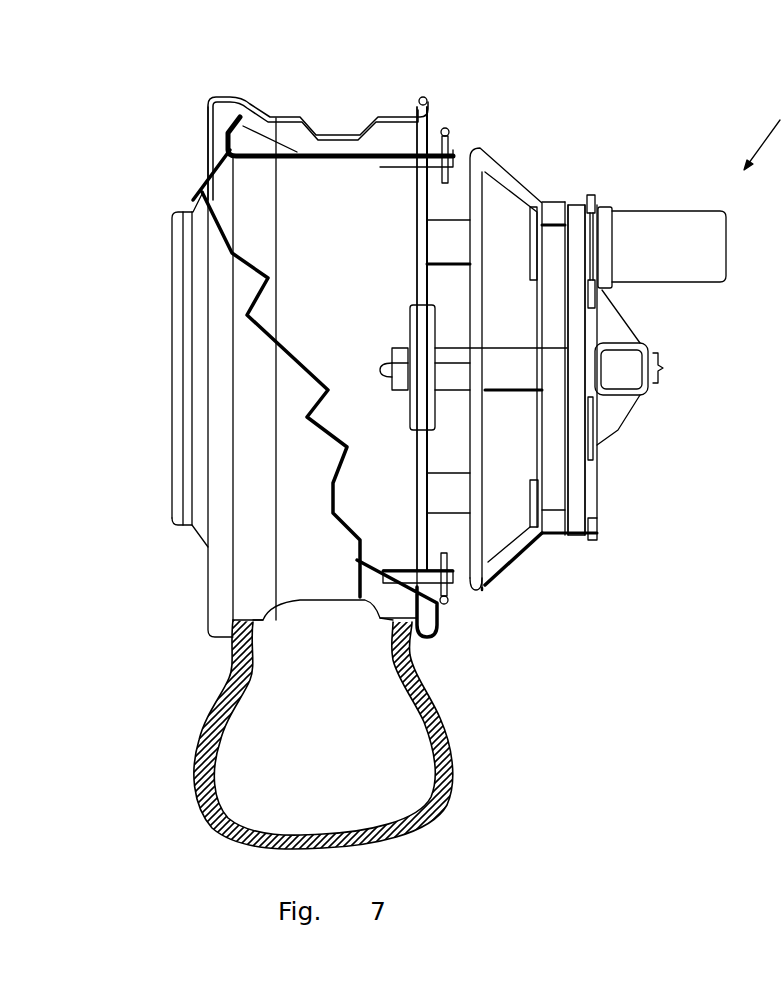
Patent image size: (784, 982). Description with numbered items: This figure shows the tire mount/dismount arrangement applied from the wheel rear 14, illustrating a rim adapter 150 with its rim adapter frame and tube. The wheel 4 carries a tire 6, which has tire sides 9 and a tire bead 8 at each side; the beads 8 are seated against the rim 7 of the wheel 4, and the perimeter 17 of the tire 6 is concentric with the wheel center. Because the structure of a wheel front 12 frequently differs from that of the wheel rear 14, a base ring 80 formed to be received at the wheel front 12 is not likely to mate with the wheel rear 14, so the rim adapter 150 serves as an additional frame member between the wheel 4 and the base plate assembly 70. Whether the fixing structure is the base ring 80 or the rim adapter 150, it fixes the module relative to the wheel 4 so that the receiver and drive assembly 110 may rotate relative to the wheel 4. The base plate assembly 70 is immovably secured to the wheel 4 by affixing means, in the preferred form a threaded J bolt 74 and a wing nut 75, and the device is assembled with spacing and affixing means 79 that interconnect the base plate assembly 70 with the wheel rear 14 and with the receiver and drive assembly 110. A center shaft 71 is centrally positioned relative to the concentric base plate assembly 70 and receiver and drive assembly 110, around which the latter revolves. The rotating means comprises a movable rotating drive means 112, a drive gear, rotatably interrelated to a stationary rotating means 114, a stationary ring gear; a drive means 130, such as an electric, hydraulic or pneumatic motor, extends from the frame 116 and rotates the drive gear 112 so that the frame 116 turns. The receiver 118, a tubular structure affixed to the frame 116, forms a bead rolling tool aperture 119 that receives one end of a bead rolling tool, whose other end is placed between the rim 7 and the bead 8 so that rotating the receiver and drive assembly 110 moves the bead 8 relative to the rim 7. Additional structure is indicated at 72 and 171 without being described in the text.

The wheel 4 is at (192, 193).
The tire 6 is at (427, 720).
The rim 7 is at (222, 96).
The tire bead 8 is at (383, 656).
The tire side 9 is at (237, 668).
The wheel front 12 is at (173, 462).
The wheel rear 14 is at (435, 148).
The perimeter of the tire 17 is at (310, 848).
The base plate assembly 70 is at (521, 579).
The center shaft 71 is at (663, 368).
The channel bracket 72 is at (527, 547).
The bolt 74 is at (262, 120).
The nut 75 is at (448, 135).
The spacing and affixing means 79 is at (450, 230).
The base ring 80 is at (483, 148).
The receiver and drive assembly 110 is at (592, 150).
The movable rotating drive means 112 is at (597, 205).
The stationary rotating means 114 is at (575, 205).
The frame 116 is at (622, 434).
The receiver 118 is at (640, 343).
The bead rolling tool aperture 119 is at (627, 368).
The drive means 130 is at (670, 233).
The rim adapter 150 is at (394, 225).
The bolt 171 is at (513, 375).